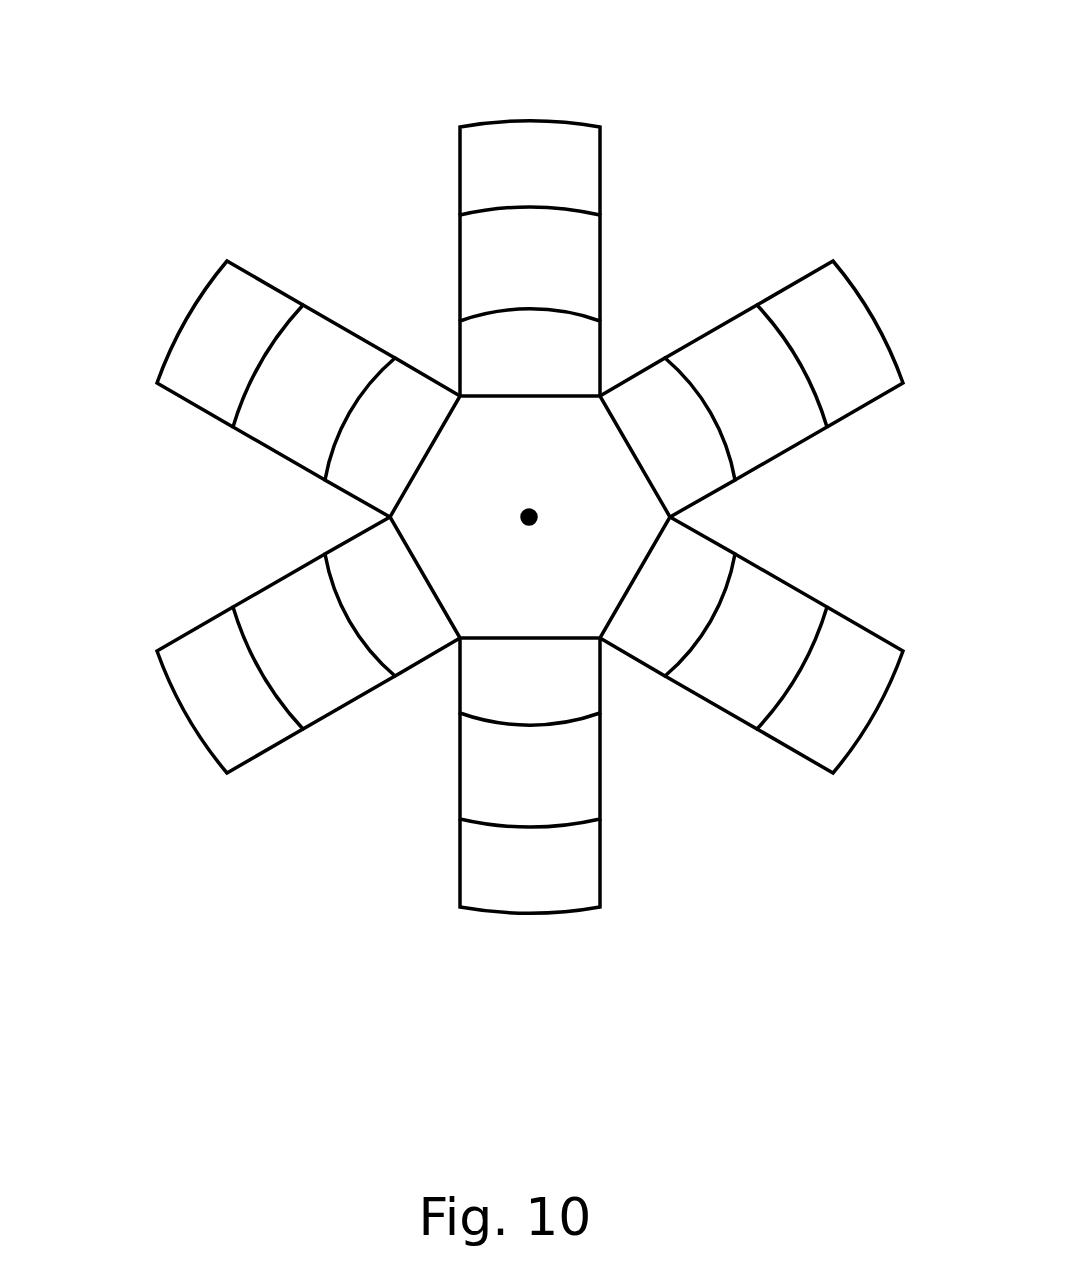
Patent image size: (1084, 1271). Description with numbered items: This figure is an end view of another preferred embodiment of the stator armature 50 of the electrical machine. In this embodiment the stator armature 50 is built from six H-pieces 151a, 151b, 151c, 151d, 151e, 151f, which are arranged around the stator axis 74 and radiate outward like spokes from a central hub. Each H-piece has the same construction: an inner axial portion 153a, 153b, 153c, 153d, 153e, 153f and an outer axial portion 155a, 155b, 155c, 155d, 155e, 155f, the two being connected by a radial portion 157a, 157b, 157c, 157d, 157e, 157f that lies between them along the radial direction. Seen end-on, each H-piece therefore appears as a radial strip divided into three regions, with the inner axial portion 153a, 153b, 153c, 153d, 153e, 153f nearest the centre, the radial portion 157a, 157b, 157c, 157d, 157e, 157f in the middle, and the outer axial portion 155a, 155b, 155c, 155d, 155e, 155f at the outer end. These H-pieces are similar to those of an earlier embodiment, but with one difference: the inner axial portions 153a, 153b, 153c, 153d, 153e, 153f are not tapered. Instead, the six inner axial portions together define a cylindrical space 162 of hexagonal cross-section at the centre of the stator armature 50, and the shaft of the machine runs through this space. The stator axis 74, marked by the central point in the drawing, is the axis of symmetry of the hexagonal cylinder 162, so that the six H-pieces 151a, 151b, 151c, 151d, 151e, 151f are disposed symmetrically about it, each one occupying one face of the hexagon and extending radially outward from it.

The stator armature 50 is at (748, 128).
The stator axis 74 is at (536, 512).
The cylindrical space 162 is at (500, 603).
The H-piece 151a is at (588, 258).
The H-piece 151b is at (786, 393).
The H-piece 151c is at (786, 645).
The H-piece 151d is at (588, 775).
The H-piece 151e is at (278, 645).
The H-piece 151f is at (277, 393).
The axial portion 153a is at (499, 383).
The axial portion 153b is at (640, 449).
The axial portion 153c is at (635, 619).
The axial portion 153d is at (499, 689).
The axial portion 153e is at (356, 619).
The axial portion 153f is at (351, 446).
The radial portion 157a is at (499, 281).
The radial portion 157b is at (716, 398).
The radial portion 157c is at (720, 664).
The radial portion 157d is at (499, 781).
The radial portion 157e is at (281, 656).
The radial portion 157f is at (278, 396).
The axial portion 155a is at (499, 184).
The axial portion 155b is at (801, 351).
The axial portion 155c is at (785, 728).
The axial portion 155d is at (499, 881).
The axial portion 155e is at (195, 711).
The axial portion 155f is at (183, 361).